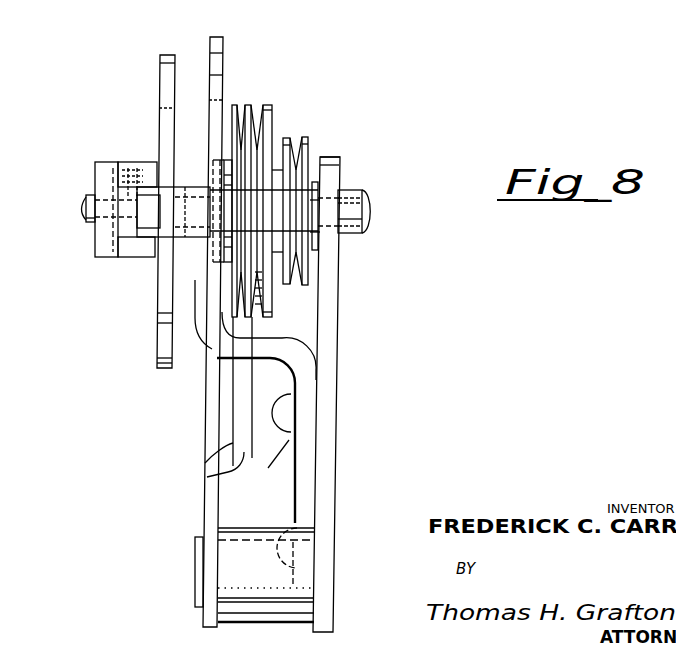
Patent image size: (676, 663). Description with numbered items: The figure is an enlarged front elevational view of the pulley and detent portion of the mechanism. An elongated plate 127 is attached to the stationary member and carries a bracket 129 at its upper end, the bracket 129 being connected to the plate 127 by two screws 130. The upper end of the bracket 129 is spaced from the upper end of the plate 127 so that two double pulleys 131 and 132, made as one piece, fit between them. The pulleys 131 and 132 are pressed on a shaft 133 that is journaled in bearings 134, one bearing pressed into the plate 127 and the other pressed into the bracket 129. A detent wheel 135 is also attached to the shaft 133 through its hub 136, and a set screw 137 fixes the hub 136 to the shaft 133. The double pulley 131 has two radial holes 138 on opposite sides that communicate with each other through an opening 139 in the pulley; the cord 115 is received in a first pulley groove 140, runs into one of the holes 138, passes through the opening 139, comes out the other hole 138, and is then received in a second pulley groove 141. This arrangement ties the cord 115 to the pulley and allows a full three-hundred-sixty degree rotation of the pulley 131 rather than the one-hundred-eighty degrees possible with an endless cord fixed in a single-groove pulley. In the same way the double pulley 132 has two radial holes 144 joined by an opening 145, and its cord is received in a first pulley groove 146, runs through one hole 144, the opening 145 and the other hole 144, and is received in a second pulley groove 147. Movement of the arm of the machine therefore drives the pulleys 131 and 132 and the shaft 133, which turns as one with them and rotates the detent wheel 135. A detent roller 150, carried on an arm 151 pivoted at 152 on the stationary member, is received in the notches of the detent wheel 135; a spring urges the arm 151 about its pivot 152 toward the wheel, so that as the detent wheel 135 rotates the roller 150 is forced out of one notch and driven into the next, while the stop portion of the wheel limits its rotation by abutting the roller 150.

The cord 115 is at (207, 464).
The elongated plate 127 is at (336, 452).
The bracket 129 is at (218, 40).
The screws 130 is at (290, 523).
The double pulley 131 is at (272, 112).
The double pulley 132 is at (309, 155).
The shaft 133 is at (80, 216).
The bearings 134 is at (176, 165).
The detent wheel 135 is at (162, 55).
The hub 136 is at (95, 186).
The set screw 137 is at (118, 162).
The radial holes 138 is at (222, 182).
The opening 139 is at (226, 170).
The first pulley groove 140 is at (234, 108).
The second pulley groove 141 is at (249, 106).
The radial holes 144 is at (289, 136).
The opening 145 is at (316, 167).
The first pulley groove 146 is at (278, 286).
The second pulley groove 147 is at (299, 288).
The detent roller 150 is at (148, 257).
The arm 151 is at (204, 420).
The pivot 152 is at (195, 574).